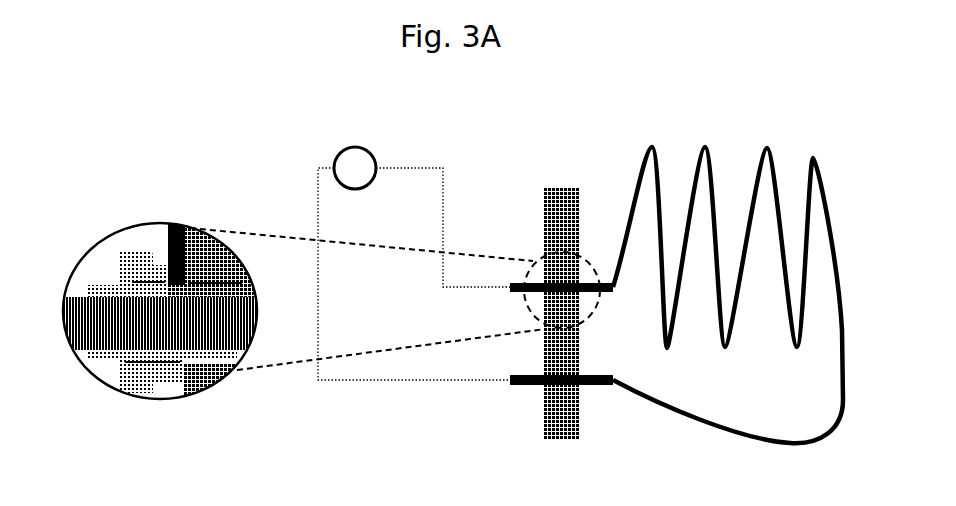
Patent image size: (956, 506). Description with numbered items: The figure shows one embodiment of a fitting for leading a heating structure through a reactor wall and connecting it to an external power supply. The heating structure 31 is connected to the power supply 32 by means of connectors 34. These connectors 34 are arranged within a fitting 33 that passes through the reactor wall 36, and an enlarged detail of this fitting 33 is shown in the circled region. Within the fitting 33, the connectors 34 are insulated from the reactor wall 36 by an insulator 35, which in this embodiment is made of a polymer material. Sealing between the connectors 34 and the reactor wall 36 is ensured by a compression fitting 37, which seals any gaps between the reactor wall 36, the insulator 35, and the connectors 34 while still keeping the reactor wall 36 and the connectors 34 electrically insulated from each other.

The heating structure 31 is at (729, 204).
The power supply 32 is at (415, 240).
The fitting 33 is at (331, 284).
The connector 34 is at (80, 336).
The insulator 35 is at (163, 366).
The reactor wall 36 is at (210, 384).
The compression fitting 37 is at (118, 389).